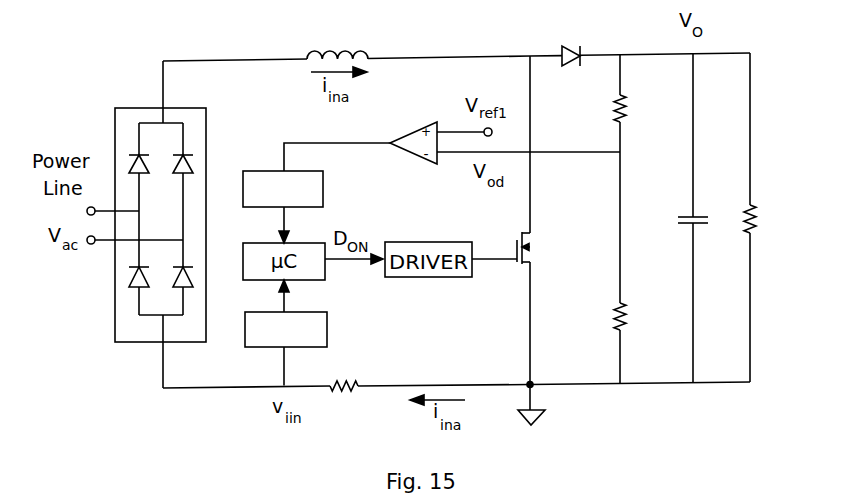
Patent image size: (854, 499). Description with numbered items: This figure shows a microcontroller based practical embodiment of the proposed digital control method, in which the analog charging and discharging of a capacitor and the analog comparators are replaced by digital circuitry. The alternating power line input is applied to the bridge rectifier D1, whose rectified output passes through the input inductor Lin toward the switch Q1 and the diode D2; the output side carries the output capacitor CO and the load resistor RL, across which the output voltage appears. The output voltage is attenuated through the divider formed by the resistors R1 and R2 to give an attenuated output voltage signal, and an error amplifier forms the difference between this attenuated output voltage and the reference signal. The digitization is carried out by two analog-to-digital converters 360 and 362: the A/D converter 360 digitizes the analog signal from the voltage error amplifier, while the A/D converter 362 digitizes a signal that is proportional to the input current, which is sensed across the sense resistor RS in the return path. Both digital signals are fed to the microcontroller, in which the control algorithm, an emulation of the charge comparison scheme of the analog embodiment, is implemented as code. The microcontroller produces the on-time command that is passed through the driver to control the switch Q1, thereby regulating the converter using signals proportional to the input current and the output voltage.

The analog-to-digital converter 360 is at (323, 197).
The analog-to-digital converter 362 is at (327, 337).
The bridge rectifier D1 is at (160, 240).
The boost diode D2 is at (573, 39).
The switch Q1 is at (541, 248).
The resistor R1 is at (604, 110).
The resistor R2 is at (605, 319).
The current sense resistor RS is at (344, 403).
The load resistor RL is at (734, 204).
The output capacitor CO is at (681, 200).
The input inductor Lin is at (337, 39).